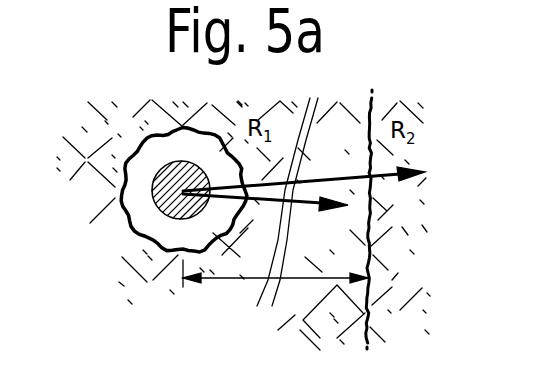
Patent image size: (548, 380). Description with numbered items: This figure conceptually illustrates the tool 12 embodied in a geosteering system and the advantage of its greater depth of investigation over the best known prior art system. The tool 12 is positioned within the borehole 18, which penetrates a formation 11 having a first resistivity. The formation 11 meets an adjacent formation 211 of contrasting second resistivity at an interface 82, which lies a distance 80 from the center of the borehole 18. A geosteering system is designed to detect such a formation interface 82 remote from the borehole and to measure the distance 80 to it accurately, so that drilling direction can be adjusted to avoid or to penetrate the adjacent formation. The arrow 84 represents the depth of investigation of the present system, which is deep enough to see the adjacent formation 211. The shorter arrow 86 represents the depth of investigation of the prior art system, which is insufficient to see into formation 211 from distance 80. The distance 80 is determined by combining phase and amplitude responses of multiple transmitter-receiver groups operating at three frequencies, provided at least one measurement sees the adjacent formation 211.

The formation 11 is at (132, 139).
The tool 12 is at (161, 211).
The borehole 18 is at (143, 197).
The distance 80 is at (246, 280).
The interface 82 is at (373, 221).
The arrow 84 is at (316, 177).
The arrow 86 is at (296, 204).
The formation 211 is at (427, 265).